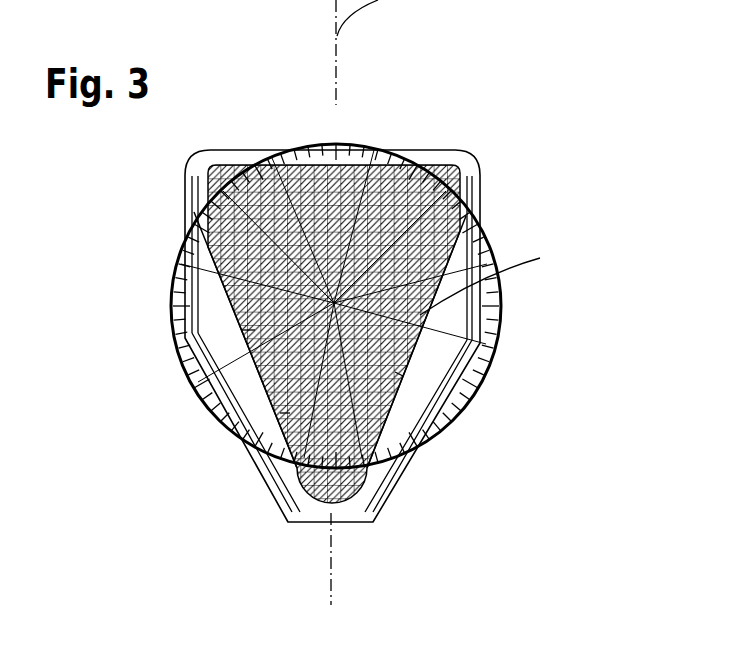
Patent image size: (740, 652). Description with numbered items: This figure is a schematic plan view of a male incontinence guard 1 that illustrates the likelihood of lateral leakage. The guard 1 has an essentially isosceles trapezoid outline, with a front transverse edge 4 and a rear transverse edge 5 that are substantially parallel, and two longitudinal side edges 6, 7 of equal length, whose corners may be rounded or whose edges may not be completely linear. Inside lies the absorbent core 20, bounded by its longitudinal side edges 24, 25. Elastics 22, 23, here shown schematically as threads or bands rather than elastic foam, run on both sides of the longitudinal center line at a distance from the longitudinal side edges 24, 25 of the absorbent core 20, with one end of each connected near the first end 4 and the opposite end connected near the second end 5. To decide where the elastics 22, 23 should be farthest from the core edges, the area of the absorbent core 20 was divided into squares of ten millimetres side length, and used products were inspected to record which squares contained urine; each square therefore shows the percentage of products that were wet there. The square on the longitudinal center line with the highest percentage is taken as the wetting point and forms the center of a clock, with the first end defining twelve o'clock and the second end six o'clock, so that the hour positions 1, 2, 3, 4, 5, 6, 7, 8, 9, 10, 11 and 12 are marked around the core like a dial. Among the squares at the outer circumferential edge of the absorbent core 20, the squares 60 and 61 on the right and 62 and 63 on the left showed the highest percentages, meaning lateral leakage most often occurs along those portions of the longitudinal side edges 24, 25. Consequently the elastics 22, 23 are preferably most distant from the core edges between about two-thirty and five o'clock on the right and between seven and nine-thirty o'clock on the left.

The male incontinence guard 1 is at (392, 152).
The 2 o'clock position 2 is at (472, 229).
The 3 o'clock position 3 is at (488, 307).
The front transverse edge 4 is at (280, 63).
The rear transverse edge 5 is at (347, 526).
The longitudinal side edge 6 is at (327, 478).
The longitudinal side edge 7 is at (248, 455).
The 8 o'clock position 8 is at (188, 393).
The 9 o'clock position 9 is at (183, 303).
The 10 o'clock position 10 is at (194, 219).
The 11 o'clock position 11 is at (283, 151).
The 12 o'clock position 12 is at (336, 133).
The absorbent core 20 is at (360, 165).
The elastic 22 is at (380, 488).
The elastic 23 is at (283, 487).
The longitudinal side edge of the absorbent core 24 is at (477, 347).
The longitudinal side edge of the absorbent core 25 is at (252, 352).
The square 60 is at (437, 290).
The square 61 is at (405, 378).
The square 62 is at (284, 413).
The square 63 is at (243, 330).